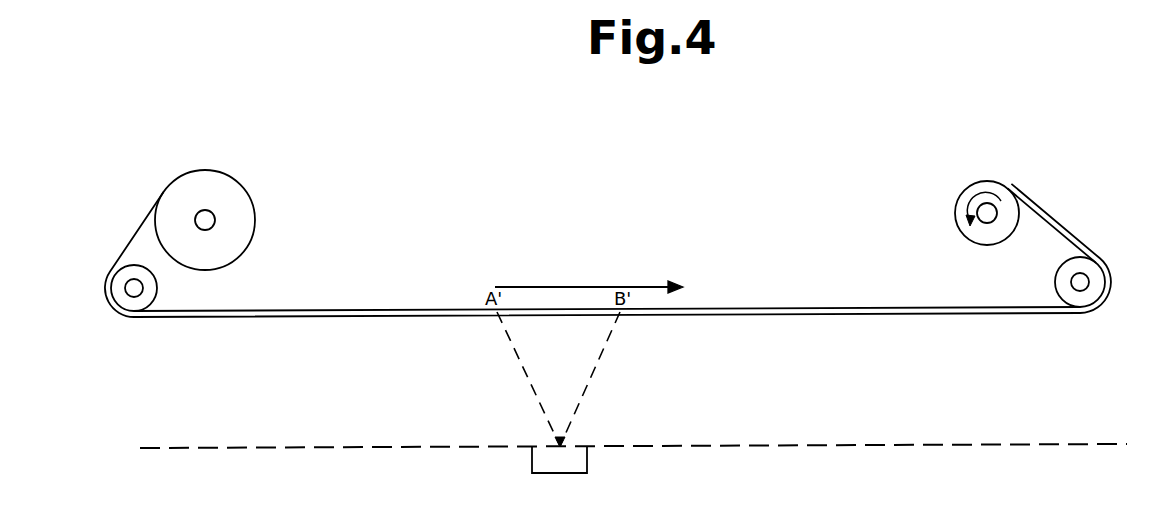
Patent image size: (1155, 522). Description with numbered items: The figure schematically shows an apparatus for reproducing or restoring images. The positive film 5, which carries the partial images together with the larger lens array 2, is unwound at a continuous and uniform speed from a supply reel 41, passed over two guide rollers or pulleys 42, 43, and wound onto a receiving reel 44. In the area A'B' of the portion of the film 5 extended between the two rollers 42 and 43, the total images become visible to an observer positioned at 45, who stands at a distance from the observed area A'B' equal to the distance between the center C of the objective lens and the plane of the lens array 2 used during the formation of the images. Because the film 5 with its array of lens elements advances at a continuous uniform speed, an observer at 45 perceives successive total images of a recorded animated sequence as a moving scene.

The lens array 2 is at (826, 313).
The film 5 is at (795, 306).
The supply reel 41 is at (250, 222).
The guide roller 42 is at (157, 290).
The guide roller 43 is at (1056, 277).
The receiving reel 44 is at (957, 217).
The observer position 45 is at (573, 474).